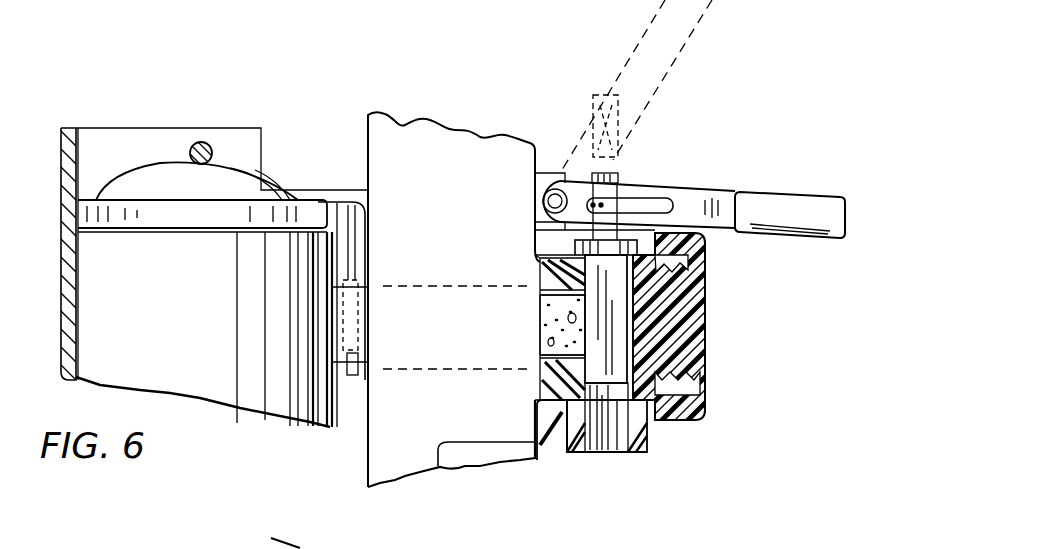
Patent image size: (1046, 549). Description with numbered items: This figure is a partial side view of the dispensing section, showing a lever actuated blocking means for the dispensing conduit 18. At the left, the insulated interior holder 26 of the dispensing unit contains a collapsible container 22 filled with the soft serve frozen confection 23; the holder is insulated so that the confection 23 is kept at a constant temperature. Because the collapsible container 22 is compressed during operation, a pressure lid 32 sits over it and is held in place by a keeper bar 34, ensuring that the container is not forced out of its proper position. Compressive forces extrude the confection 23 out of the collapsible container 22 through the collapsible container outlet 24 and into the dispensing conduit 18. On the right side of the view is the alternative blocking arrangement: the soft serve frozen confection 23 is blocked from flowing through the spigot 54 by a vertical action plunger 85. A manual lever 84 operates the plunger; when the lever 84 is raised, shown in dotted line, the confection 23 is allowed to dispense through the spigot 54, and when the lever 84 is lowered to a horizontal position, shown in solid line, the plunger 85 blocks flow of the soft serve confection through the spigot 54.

The dispensing conduit 18 is at (439, 297).
The collapsible container 22 is at (90, 302).
The soft serve frozen confection 23 is at (533, 342).
The collapsible container outlet 24 is at (347, 358).
The insulated interior holder 26 is at (70, 197).
The pressure lid 32 is at (125, 185).
The keeper bar 34 is at (199, 142).
The spigot 54 is at (622, 433).
The manual lever 84 is at (688, 40).
The vertical action plunger 85 is at (608, 335).